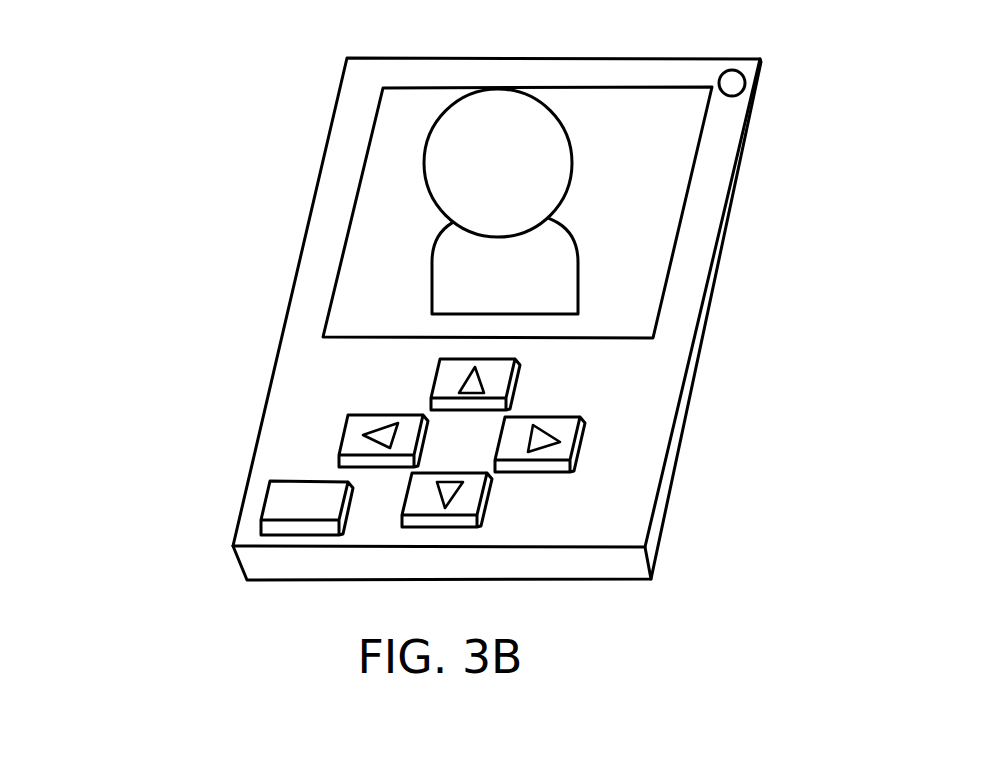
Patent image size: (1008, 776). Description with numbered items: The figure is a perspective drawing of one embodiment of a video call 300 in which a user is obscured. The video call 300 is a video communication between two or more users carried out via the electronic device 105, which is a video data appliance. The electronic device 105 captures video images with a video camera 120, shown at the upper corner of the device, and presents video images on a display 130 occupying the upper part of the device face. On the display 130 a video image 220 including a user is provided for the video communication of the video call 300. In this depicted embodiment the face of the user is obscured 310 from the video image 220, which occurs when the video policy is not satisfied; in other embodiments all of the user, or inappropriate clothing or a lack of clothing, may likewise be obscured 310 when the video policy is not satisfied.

The video call 300 is at (118, 77).
The electronic device 105 is at (327, 120).
The video camera 120 is at (761, 63).
The display 130 is at (653, 155).
The obscured face of the user 310 is at (573, 164).
The video image 220 is at (432, 300).